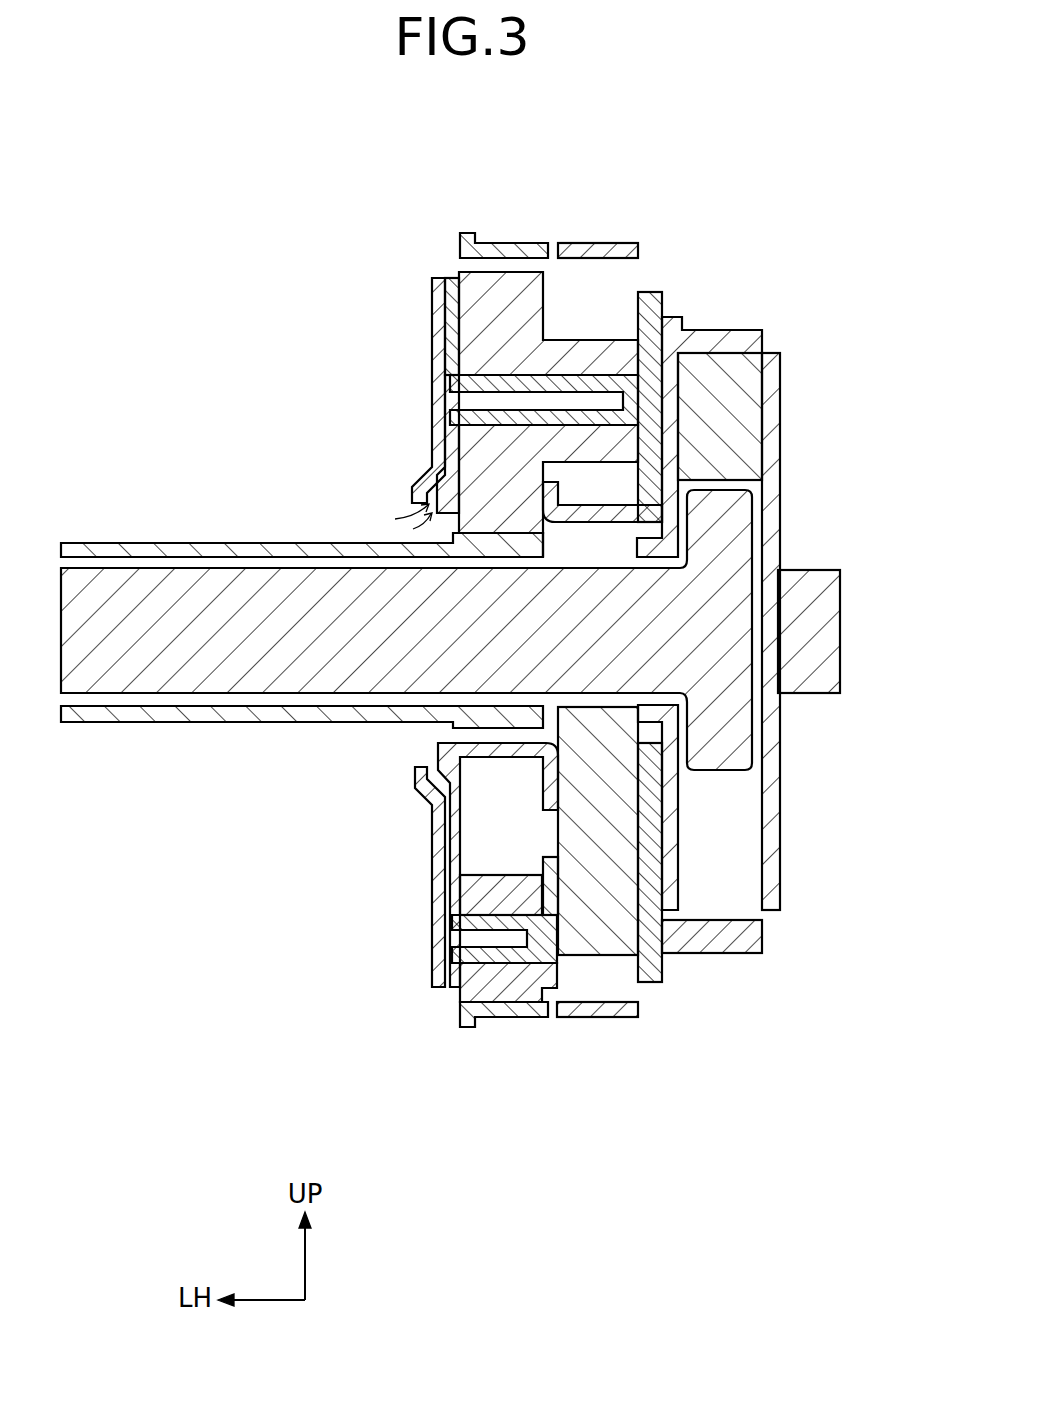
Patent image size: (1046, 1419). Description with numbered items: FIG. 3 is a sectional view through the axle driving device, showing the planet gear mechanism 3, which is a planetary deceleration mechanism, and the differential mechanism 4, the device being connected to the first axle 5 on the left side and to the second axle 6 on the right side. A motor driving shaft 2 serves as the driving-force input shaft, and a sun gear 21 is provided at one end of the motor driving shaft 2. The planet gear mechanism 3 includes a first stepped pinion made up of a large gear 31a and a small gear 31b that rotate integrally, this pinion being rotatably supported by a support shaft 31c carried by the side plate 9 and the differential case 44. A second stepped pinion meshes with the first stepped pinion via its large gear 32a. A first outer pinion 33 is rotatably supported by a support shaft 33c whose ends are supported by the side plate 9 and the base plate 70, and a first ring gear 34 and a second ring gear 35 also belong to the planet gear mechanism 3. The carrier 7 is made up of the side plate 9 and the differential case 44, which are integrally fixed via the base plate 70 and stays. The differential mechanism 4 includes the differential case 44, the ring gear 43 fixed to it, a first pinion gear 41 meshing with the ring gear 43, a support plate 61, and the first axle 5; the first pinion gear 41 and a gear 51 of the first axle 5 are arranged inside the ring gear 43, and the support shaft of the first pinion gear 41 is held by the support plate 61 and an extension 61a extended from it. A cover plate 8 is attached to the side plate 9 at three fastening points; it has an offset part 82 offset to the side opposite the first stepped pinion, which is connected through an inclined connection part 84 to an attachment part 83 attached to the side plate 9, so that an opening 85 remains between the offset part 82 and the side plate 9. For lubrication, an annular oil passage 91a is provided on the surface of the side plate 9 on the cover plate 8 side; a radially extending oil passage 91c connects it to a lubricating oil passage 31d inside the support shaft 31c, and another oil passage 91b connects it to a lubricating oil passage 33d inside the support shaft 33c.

The motor driving shaft 2 is at (156, 545).
The planet gear mechanism 3 is at (480, 586).
The differential mechanism 4 is at (752, 500).
The first axle 5 is at (307, 620).
The second axle 6 is at (806, 578).
The carrier 7 is at (652, 567).
The cover plate 8 is at (432, 308).
The side plate 9 is at (452, 278).
The sun gear 21 is at (530, 541).
The large gear 31a is at (525, 327).
The small gear 31b is at (585, 352).
The support shaft 31c is at (455, 388).
The lubricating oil passage 31d is at (523, 398).
The large gear 32a is at (576, 775).
The first outer pinion 33 is at (531, 990).
The support shaft 33c is at (445, 988).
The lubricating oil passage 33d is at (490, 940).
The first ring gear 34 is at (503, 245).
The second ring gear 35 is at (596, 250).
The first pinion gear 41 is at (736, 402).
The ring gear 43 is at (748, 340).
The differential case 44 is at (648, 437).
The gear 51 is at (738, 535).
The support plate 61 is at (773, 447).
The extension 61a is at (770, 802).
The base plate 70 is at (553, 483).
The offset part 82 is at (418, 772).
The attachment part 83 is at (448, 960).
The connection part 84 is at (424, 786).
The opening 85 is at (380, 518).
The annular oil passage 91a is at (440, 467).
The oil passage 91b is at (455, 900).
The oil passage 91c is at (450, 422).